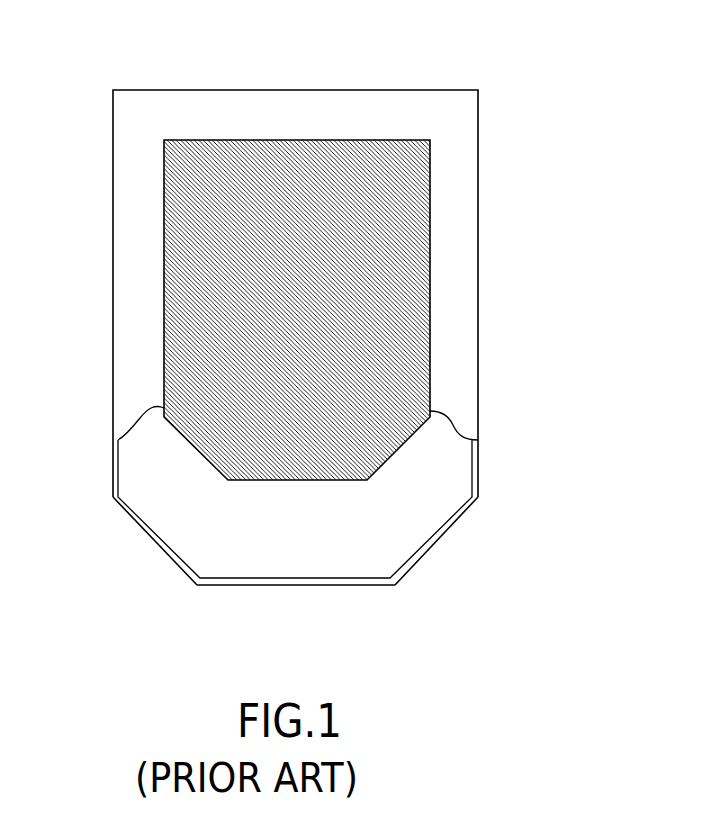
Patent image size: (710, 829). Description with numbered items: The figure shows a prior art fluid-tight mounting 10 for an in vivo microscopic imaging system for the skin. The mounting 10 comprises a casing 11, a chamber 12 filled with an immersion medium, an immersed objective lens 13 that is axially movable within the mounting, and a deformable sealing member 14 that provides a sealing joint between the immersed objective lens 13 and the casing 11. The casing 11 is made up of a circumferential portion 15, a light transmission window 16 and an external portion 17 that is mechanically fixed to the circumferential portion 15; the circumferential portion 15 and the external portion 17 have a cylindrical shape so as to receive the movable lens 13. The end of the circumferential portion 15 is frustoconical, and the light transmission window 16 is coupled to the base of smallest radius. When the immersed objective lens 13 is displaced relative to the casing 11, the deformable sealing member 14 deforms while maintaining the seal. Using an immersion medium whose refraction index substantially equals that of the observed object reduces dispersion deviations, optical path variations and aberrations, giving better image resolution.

The fluid-tight mounting 10 is at (583, 82).
The casing 11 is at (490, 341).
The chamber 12 is at (168, 492).
The immersed objective lens 13 is at (164, 165).
The deformable sealing member 14 is at (130, 432).
The circumferential portion 15 is at (452, 518).
The light transmission window 16 is at (297, 588).
The external portion 17 is at (458, 213).